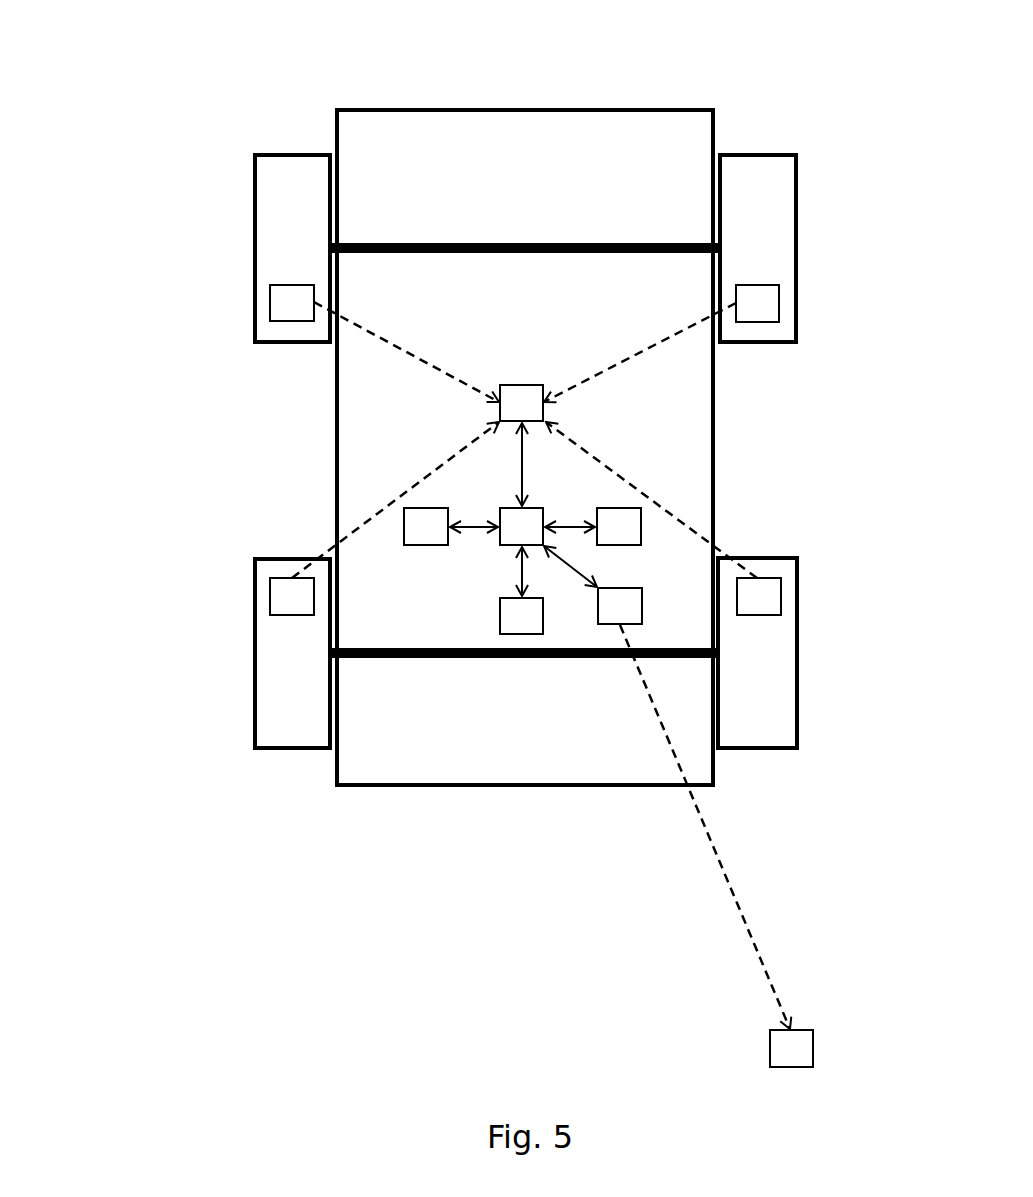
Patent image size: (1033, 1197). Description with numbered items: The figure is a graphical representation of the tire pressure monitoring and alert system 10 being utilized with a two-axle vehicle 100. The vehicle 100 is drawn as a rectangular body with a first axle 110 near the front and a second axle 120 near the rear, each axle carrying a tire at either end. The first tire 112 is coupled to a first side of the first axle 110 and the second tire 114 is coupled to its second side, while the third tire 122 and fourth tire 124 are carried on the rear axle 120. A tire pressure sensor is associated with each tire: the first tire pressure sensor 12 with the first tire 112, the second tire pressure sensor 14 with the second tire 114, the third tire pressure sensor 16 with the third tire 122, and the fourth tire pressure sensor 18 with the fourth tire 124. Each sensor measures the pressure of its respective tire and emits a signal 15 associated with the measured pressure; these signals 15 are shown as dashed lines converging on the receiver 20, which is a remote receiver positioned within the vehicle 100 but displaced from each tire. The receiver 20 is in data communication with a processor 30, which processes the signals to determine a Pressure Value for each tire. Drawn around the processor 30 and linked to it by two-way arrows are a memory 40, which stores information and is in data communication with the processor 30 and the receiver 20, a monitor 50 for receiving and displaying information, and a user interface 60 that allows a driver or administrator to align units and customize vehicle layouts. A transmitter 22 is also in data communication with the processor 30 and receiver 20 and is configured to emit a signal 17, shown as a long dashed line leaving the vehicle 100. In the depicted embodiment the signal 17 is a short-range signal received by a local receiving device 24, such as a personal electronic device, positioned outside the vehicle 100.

The tire pressure monitoring and alert system 10 is at (165, 108).
The vehicle 100 is at (600, 107).
The first axle 110 is at (525, 243).
The rear axle 120 is at (519, 658).
The first tire 112 is at (277, 152).
The second tire 114 is at (769, 153).
The third tire 122 is at (278, 557).
The fourth tire 124 is at (770, 558).
The first tire pressure sensor 12 is at (292, 303).
The second tire pressure sensor 14 is at (757, 303).
The third tire pressure sensor 16 is at (292, 596).
The fourth tire pressure sensor 18 is at (759, 596).
The signal 15 is at (408, 350).
The signal 17 is at (750, 938).
The receiver 20 is at (521, 403).
The processor 30 is at (523, 509).
The memory 40 is at (619, 526).
The monitor 50 is at (426, 526).
The user interface 60 is at (521, 616).
The transmitter 22 is at (620, 606).
The local receiving device 24 is at (791, 1048).